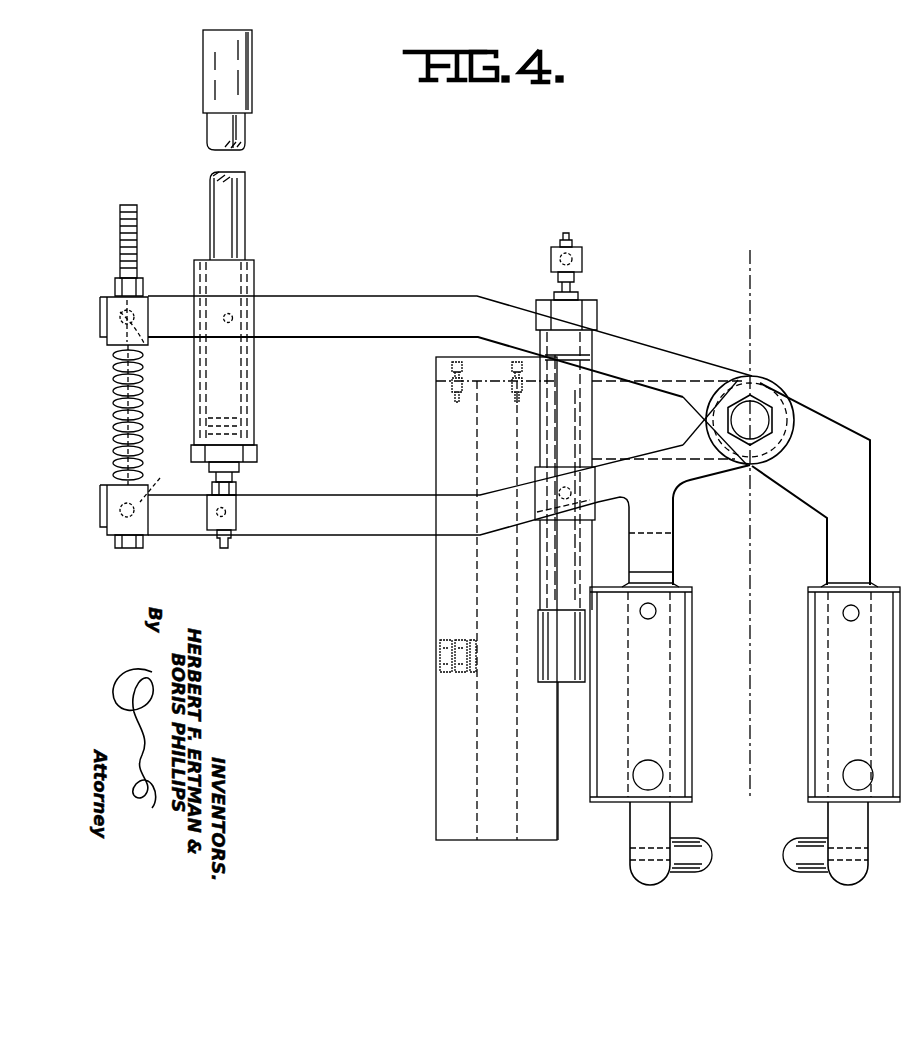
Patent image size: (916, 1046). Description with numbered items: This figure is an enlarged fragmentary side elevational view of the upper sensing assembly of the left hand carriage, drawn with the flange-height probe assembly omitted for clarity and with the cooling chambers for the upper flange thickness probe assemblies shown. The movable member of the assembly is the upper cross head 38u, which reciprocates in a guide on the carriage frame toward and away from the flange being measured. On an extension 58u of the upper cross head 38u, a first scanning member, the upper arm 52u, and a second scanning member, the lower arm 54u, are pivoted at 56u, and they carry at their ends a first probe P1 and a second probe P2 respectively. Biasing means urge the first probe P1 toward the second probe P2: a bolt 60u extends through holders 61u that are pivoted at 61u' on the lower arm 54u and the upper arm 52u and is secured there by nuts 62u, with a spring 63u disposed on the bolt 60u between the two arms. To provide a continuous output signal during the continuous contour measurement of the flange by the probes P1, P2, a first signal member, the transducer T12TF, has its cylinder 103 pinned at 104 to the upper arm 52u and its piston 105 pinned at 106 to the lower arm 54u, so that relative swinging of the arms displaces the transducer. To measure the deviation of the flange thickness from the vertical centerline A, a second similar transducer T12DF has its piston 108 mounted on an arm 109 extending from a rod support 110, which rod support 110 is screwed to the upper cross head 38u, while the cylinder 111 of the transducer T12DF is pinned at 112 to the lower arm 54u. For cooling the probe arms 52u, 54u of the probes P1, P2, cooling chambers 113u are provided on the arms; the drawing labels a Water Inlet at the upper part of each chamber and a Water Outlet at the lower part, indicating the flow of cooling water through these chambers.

The transducer T12TF is at (250, 212).
The cylinder 103 is at (255, 270).
The pin 104 is at (234, 318).
The piston 105 is at (236, 488).
The pin 106 is at (236, 513).
The upper arm 52u is at (382, 307).
The lower arm 54u is at (339, 537).
The pivot 56u is at (760, 406).
The extension 58u is at (695, 382).
The nuts 62u is at (145, 278).
The holders 61u is at (145, 416).
The pivot 61u' is at (158, 407).
The spring 63u is at (140, 386).
The bolt 60u is at (126, 550).
The upper cross head 38u is at (445, 726).
The rod support 110 is at (582, 250).
The arm 109 is at (584, 260).
The piston 108 is at (580, 290).
The cylinder 111 is at (592, 404).
The pin 112 is at (571, 493).
The transducer T12DF is at (582, 567).
The vertical centerline A is at (748, 523).
The cooling chambers 113u is at (803, 673).
The water inlet Water Inlet is at (657, 609).
The water outlet Water Outlet is at (866, 778).
The first probe P1 is at (714, 828).
The second probe P2 is at (786, 842).